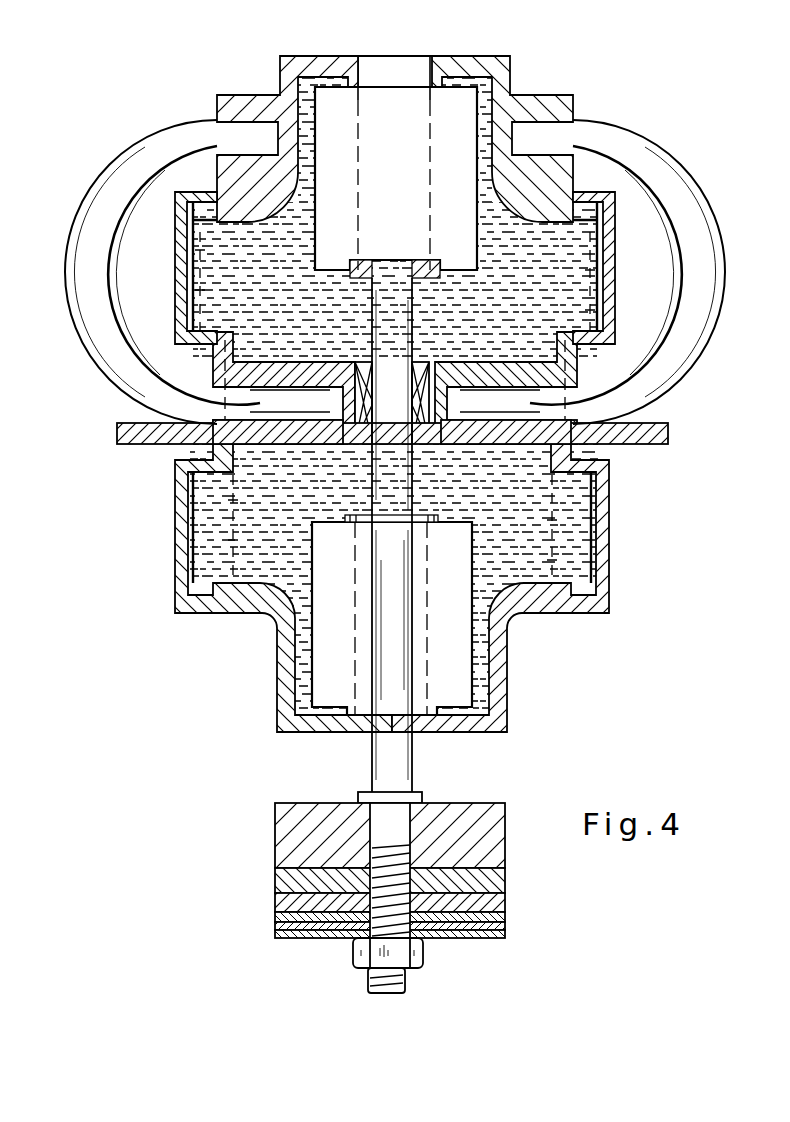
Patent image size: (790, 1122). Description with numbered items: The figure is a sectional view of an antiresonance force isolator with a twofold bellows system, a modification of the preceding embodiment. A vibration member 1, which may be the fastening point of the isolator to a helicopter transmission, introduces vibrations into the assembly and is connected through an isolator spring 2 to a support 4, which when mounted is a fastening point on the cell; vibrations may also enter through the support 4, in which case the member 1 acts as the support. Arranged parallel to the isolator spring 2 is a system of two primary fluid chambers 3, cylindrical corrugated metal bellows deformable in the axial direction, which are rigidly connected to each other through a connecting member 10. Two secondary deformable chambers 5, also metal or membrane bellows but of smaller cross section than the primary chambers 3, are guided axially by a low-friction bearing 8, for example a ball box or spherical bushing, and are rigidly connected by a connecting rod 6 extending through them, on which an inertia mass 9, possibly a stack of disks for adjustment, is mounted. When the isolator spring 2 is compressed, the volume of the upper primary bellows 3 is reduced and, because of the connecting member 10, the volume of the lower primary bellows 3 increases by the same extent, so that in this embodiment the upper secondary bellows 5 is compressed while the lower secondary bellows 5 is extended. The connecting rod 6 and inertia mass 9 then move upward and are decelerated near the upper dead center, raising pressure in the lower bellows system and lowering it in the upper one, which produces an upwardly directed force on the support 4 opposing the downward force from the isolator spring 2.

The vibration member 1 is at (316, 72).
The isolator spring 2 is at (144, 142).
The primary fluid chambers 3 is at (213, 268).
The support 4 is at (137, 432).
The secondary deformable chambers 5 is at (330, 193).
The connecting rod 6 is at (382, 668).
The bearing 8 is at (365, 418).
The inertia mass 9 is at (283, 842).
The connecting member 10 is at (178, 310).